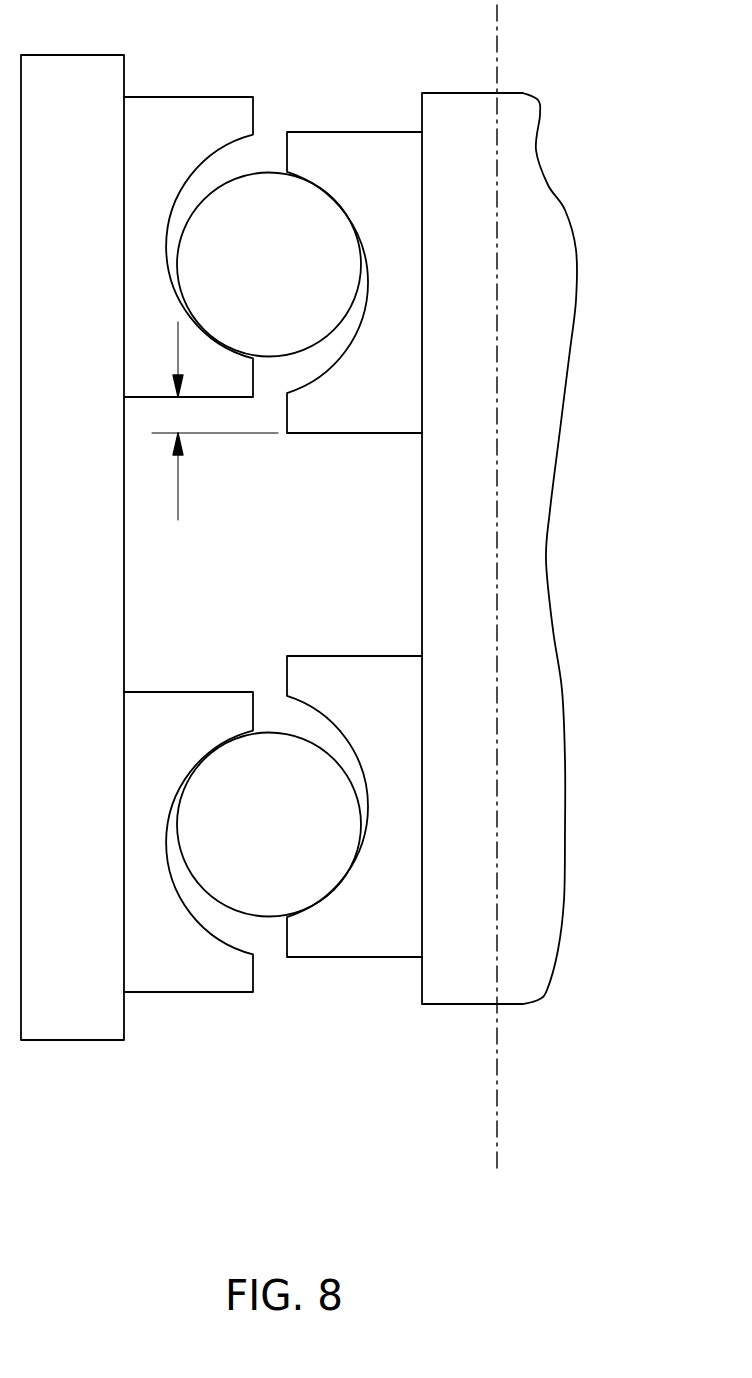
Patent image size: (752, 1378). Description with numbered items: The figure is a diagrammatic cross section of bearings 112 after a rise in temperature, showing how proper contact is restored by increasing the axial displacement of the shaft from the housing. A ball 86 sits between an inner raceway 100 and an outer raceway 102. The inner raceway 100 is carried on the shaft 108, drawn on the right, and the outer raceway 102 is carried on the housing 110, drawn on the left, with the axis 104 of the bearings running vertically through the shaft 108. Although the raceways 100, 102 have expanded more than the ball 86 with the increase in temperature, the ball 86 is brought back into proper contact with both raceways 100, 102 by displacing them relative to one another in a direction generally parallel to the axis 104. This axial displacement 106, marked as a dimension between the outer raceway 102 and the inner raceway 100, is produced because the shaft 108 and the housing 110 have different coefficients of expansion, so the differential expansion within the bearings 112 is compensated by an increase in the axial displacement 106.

The ball 86 is at (277, 248).
The inner raceway 100 is at (327, 378).
The outer raceway 102 is at (205, 160).
The axis 104 is at (497, 1073).
The axial displacement 106 is at (215, 422).
The shaft 108 is at (484, 591).
The housing 110 is at (102, 598).
The bearings 112 is at (225, 1032).